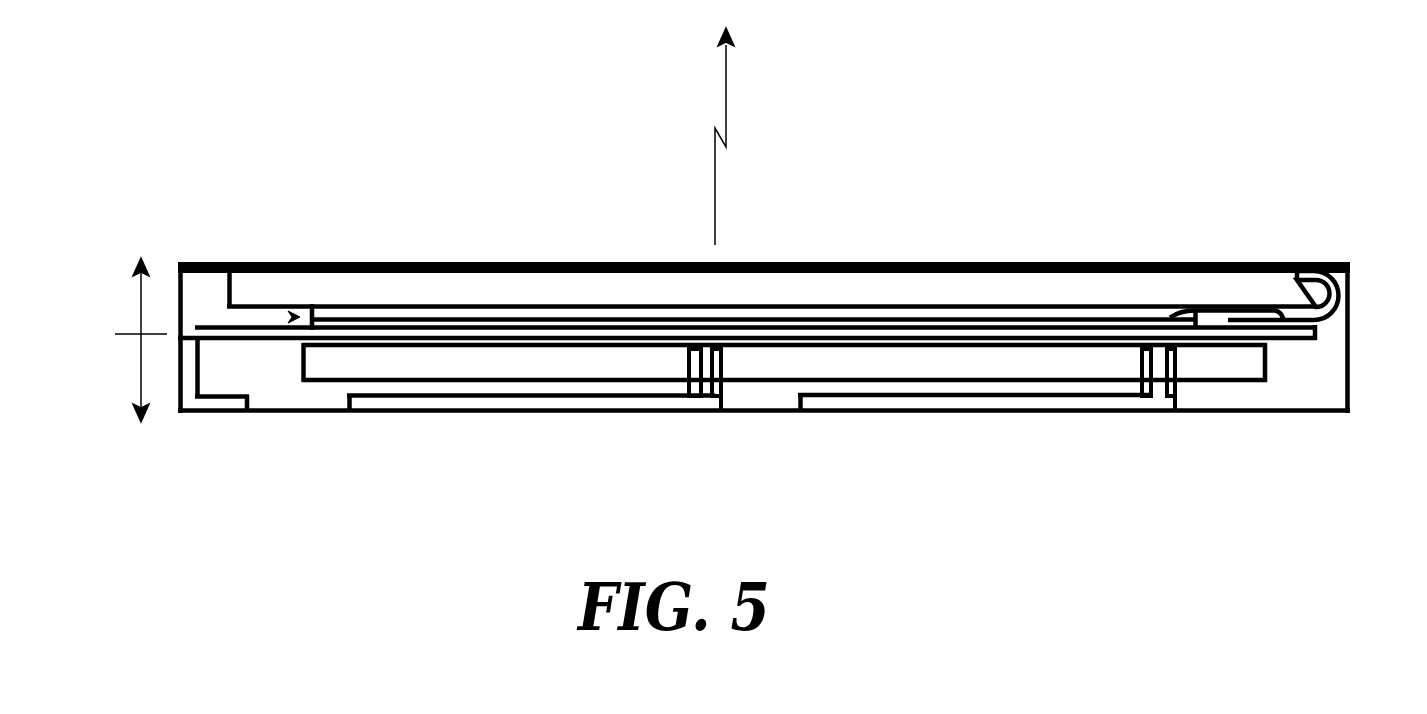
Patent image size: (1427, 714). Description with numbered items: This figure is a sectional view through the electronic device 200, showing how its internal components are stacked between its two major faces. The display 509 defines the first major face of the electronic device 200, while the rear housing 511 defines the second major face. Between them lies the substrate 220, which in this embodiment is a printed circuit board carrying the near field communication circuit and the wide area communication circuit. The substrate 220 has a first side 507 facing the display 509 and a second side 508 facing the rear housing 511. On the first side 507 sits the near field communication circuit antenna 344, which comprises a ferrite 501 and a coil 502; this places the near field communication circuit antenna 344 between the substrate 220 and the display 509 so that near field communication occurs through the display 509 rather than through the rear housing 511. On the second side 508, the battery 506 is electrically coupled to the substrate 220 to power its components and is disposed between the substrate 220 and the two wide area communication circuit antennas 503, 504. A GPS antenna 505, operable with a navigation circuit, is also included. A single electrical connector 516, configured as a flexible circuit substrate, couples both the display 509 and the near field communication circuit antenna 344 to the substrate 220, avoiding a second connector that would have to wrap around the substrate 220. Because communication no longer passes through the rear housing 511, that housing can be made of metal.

The electronic device 200 is at (394, 194).
The display 509 is at (777, 283).
The ferrite 501 is at (365, 312).
The second layer (flexible display layer) 502 is at (485, 317).
The electrical connector 516 is at (1340, 298).
The substrate 220 is at (1303, 340).
The near field communication circuit antenna 344 is at (292, 317).
The GPS antenna 505 is at (203, 407).
The wide area communication circuit antenna 503 is at (463, 405).
The wide area communication circuit antenna 504 is at (933, 405).
The battery 506 is at (1202, 362).
The rear housing 511 is at (755, 412).
The first side 507 is at (140, 305).
The second side 508 is at (140, 370).